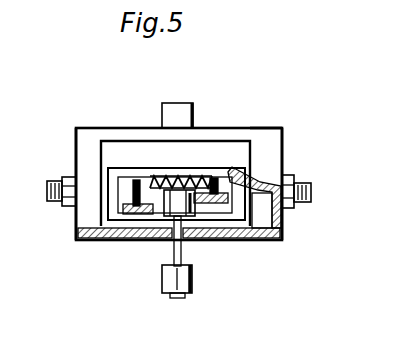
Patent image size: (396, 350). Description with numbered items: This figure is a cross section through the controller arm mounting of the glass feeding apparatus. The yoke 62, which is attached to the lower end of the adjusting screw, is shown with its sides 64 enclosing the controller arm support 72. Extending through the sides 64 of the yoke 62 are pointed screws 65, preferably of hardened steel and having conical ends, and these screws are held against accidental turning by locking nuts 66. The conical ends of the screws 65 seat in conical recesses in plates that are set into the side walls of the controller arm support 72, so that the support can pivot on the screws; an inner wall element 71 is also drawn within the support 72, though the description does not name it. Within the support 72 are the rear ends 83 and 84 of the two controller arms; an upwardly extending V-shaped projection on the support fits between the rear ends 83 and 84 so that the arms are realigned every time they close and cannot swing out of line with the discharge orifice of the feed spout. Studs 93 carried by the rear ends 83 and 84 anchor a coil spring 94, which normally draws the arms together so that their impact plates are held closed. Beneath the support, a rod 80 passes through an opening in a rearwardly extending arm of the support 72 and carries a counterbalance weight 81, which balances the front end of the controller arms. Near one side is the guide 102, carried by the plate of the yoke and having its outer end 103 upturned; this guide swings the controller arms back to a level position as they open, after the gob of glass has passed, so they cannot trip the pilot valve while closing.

The yoke 62 is at (126, 128).
The sides of the yoke 64 is at (76, 147).
The pointed screws 65 is at (47, 183).
The locking nuts 66 is at (72, 178).
The inner box 71 is at (112, 206).
The controller arm support 72 is at (207, 172).
The rod 80 is at (182, 255).
The counterbalance weight 81 is at (165, 280).
The rear end of controller arm 83 is at (248, 237).
The rear end of controller arm 84 is at (133, 215).
The studs 93 is at (134, 193).
The coil spring 94 is at (167, 182).
The guide 102 is at (266, 172).
The outer end of guide 103 is at (272, 146).